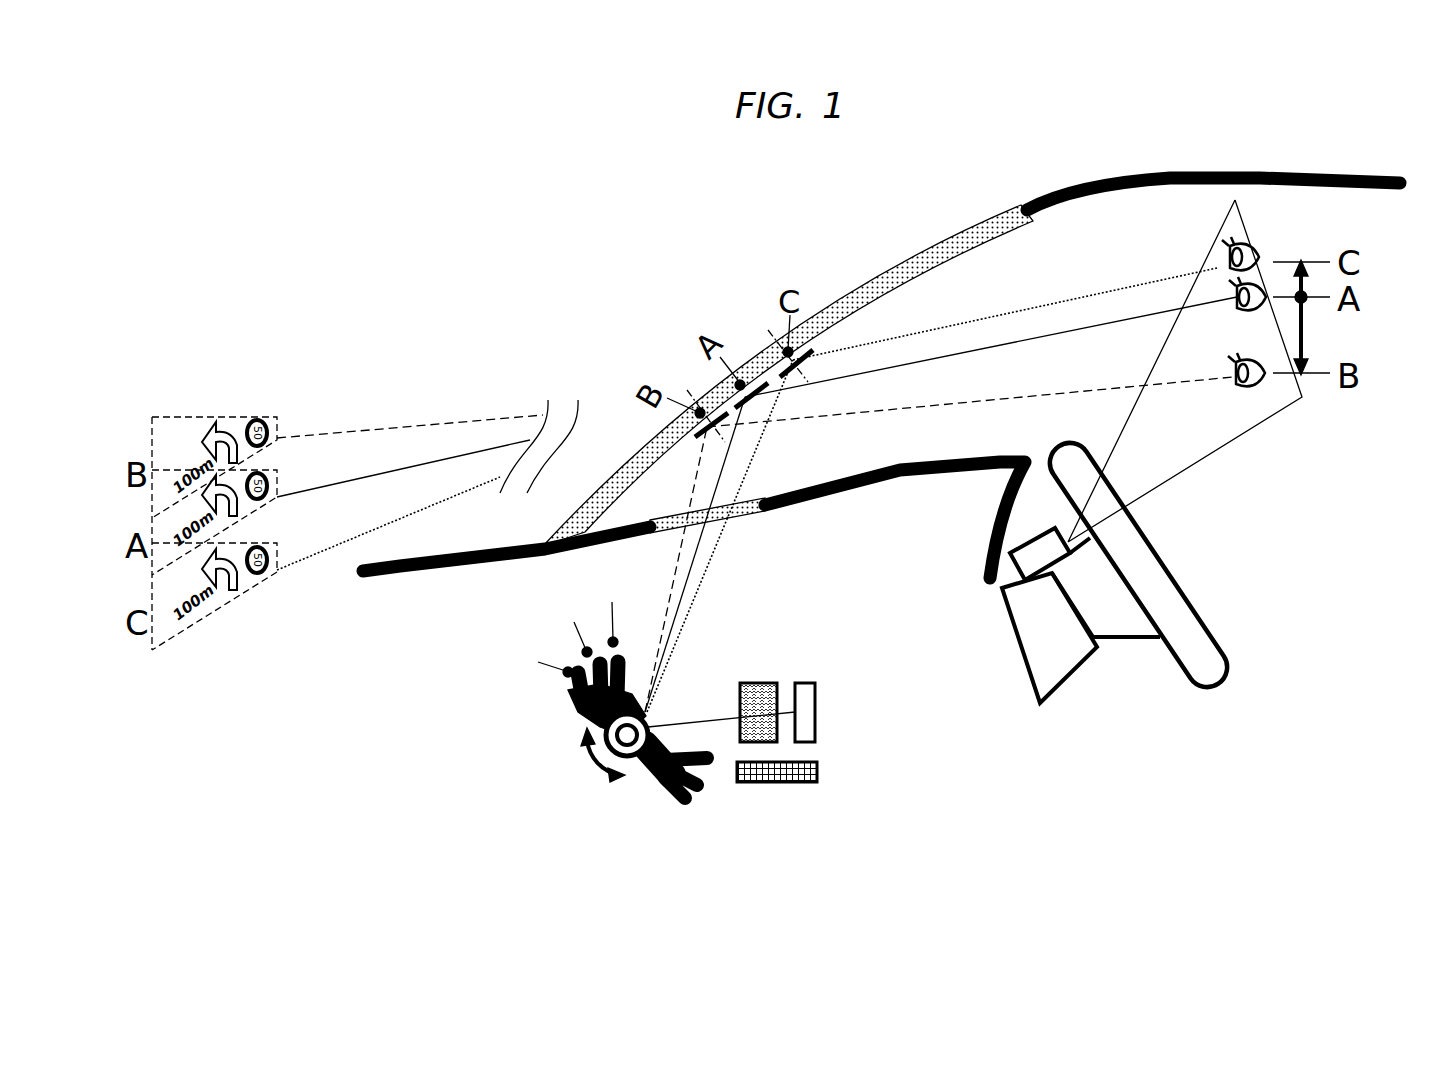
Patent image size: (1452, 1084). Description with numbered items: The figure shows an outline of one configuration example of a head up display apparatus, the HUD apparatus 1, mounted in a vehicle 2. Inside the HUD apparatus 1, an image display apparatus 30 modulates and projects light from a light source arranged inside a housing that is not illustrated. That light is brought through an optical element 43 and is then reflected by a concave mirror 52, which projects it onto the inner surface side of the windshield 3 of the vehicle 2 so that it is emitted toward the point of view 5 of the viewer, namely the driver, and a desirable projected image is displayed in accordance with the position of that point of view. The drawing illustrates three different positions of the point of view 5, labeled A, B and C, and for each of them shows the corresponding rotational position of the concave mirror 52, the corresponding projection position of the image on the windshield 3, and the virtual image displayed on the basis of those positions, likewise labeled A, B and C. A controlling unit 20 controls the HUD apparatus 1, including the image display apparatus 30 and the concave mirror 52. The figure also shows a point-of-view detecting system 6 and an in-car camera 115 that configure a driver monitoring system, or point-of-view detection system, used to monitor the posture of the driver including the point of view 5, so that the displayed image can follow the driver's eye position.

The HUD apparatus 1 is at (692, 741).
The vehicle 2 is at (1165, 178).
The windshield 3 is at (940, 245).
The point of view of driver 5 is at (1228, 262).
The point-of-view detecting system 6 is at (1012, 580).
The controlling unit 20 is at (783, 804).
The image display apparatus 30 is at (805, 683).
The optical element 43 is at (752, 683).
The concave mirror 52 is at (575, 702).
The camera 115 is at (1068, 540).